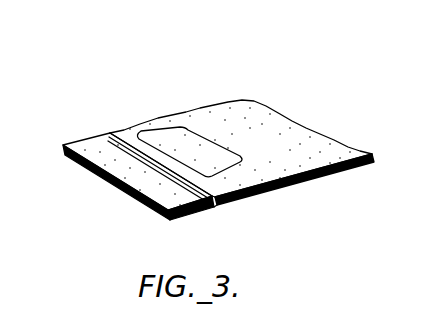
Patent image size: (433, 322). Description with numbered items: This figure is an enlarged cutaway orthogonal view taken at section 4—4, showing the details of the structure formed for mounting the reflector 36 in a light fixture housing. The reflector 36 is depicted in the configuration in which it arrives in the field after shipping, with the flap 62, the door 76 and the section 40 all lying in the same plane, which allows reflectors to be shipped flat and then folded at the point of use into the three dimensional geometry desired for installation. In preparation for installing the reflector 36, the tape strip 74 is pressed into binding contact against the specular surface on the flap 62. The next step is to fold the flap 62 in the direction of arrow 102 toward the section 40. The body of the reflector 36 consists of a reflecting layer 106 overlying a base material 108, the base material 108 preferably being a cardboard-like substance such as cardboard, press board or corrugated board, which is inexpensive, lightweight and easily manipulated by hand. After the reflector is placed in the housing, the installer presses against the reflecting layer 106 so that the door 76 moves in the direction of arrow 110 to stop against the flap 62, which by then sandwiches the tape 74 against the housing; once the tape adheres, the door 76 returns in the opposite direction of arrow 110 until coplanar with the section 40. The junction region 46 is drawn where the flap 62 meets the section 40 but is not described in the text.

The reflector 36 is at (225, 150).
The section 40 is at (272, 153).
The arrow 102 is at (123, 168).
The flap 62 is at (170, 196).
The tape strip 74 is at (167, 221).
The door 76 is at (158, 133).
The arrow 110 is at (168, 142).
The junction 46 is at (217, 201).
The base material 108 is at (372, 153).
The reflecting layer 106 is at (356, 167).
The section 4— 4 is at (100, 183).